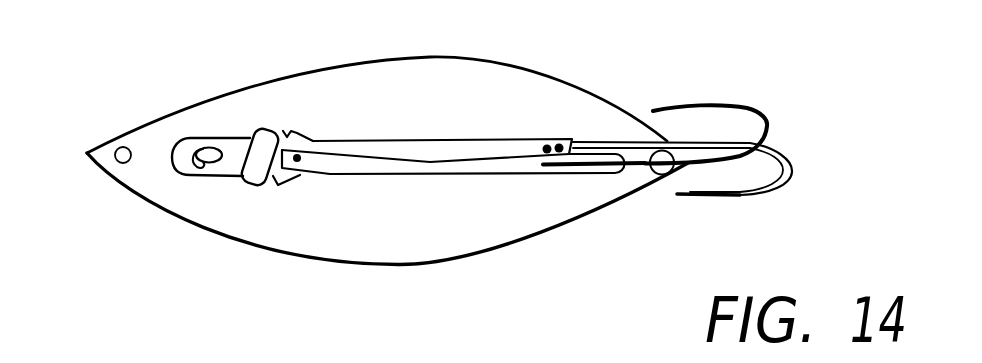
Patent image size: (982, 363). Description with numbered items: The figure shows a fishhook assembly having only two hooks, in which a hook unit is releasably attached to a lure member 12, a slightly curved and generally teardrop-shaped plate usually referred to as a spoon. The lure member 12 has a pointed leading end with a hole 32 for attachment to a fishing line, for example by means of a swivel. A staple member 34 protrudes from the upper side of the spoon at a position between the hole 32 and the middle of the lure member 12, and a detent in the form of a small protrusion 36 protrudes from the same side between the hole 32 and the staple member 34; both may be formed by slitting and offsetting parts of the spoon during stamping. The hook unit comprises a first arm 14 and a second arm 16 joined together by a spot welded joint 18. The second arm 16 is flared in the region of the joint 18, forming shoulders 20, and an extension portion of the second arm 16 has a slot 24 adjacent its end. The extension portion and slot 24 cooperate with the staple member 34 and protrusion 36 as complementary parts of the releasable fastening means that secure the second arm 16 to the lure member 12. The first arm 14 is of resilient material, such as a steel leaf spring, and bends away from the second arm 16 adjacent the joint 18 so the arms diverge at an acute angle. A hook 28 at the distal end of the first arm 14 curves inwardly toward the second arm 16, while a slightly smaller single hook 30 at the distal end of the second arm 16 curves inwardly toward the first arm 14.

The lure member 12 is at (196, 100).
The first arm 14 is at (476, 154).
The second arm 16 is at (561, 176).
The spot welded joint 18 is at (299, 160).
The shoulders 20 is at (283, 131).
The slot 24 is at (197, 166).
The hook 28 is at (761, 195).
The single hook 30 is at (767, 127).
The hole 32 is at (118, 153).
The staple member 34 is at (265, 147).
The protrusion 36 is at (209, 153).